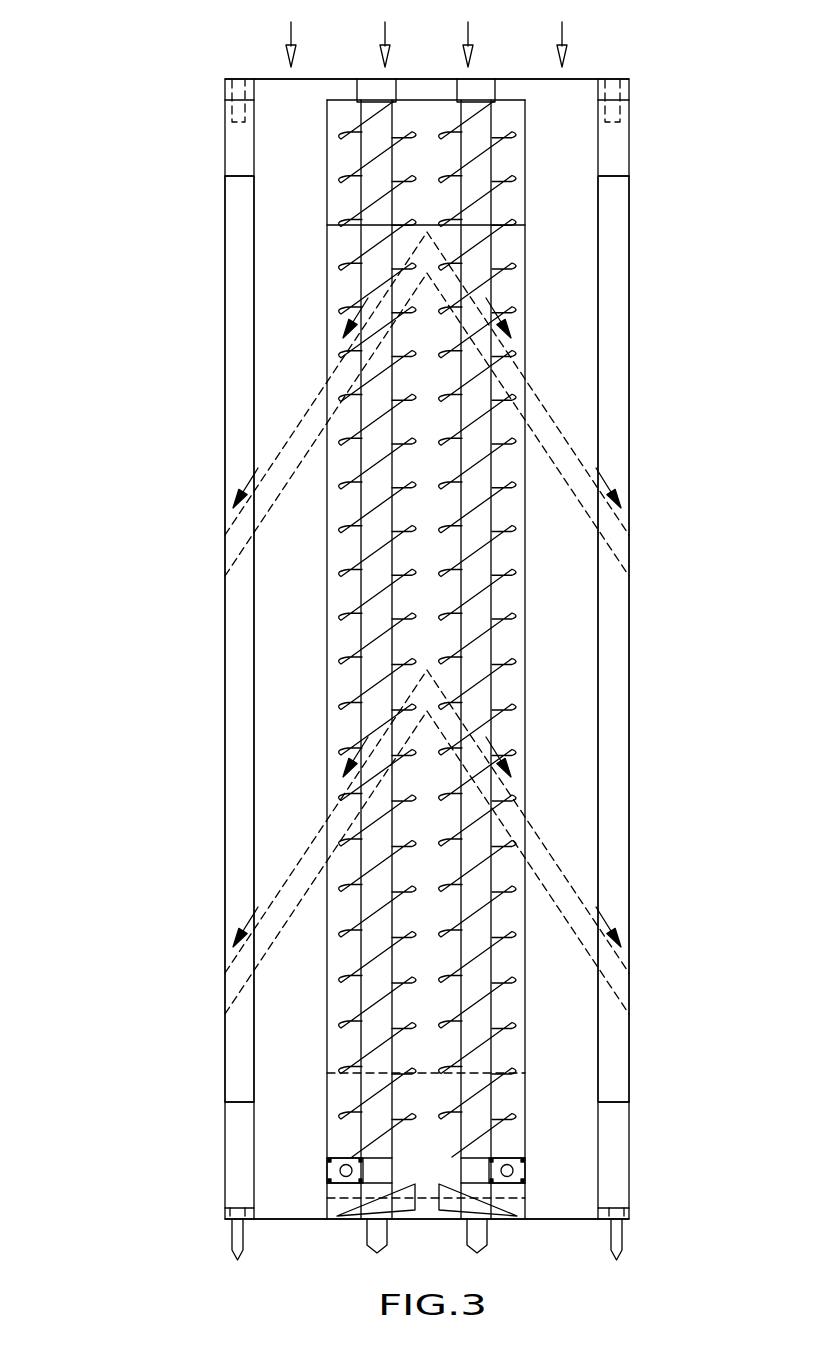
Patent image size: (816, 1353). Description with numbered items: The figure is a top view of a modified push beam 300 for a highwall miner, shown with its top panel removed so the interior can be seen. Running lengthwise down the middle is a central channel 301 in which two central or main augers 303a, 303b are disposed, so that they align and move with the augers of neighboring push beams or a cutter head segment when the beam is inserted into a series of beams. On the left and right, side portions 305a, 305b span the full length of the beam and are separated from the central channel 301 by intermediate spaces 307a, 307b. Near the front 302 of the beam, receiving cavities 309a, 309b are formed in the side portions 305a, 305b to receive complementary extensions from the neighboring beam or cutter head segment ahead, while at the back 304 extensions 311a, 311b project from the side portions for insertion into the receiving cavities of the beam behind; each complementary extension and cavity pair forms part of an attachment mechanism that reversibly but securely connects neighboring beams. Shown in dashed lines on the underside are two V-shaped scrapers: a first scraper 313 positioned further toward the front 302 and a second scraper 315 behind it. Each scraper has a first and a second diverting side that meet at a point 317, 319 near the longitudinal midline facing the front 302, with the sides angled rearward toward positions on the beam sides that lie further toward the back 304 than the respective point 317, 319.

The modified push beam 300 is at (88, 199).
The central channel 301 is at (503, 283).
The front 302 is at (585, 79).
The central auger 303a is at (373, 186).
The central auger 303b is at (475, 188).
The back 304 is at (555, 1221).
The side portion 305a is at (238, 449).
The side portion 305b is at (615, 450).
The intermediate space 307a is at (268, 693).
The intermediate space 307b is at (586, 693).
The receiving cavity 309a is at (238, 101).
The receiving cavity 309b is at (617, 101).
The extension 311a is at (235, 1230).
The extension 311b is at (619, 1230).
The first scraper 313 is at (555, 443).
The second scraper 315 is at (285, 907).
The point 317 is at (427, 252).
The point 319 is at (428, 690).